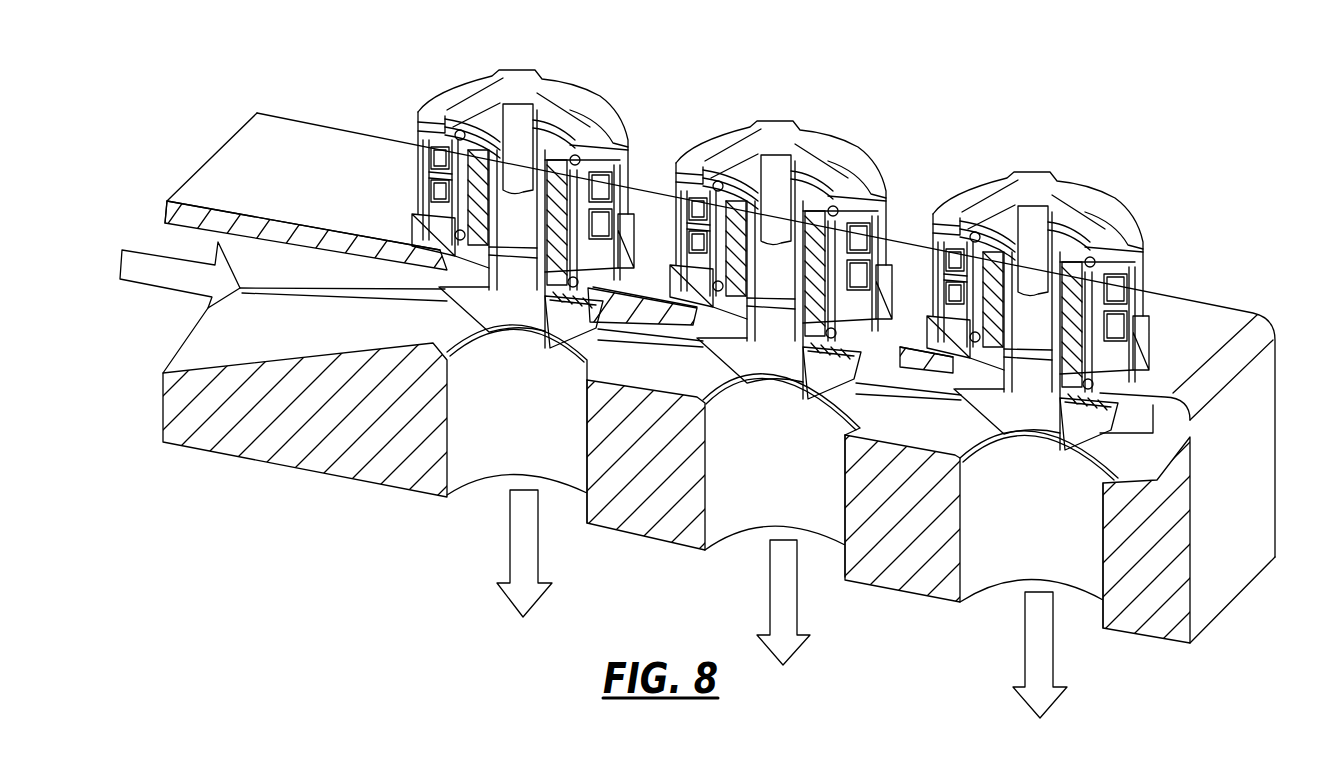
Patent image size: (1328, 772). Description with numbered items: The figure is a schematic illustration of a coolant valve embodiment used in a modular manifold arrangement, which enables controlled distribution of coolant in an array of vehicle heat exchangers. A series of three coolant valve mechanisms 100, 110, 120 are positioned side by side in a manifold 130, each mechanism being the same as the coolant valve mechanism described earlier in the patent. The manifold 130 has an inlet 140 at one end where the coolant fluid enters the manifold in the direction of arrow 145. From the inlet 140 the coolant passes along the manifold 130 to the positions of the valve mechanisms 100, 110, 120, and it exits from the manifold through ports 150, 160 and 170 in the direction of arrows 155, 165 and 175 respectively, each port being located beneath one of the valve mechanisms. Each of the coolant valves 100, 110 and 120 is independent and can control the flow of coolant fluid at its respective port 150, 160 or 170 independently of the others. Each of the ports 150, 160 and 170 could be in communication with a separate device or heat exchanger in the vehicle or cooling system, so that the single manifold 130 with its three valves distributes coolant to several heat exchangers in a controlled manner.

The coolant valve mechanism 100 is at (600, 103).
The coolant valve mechanism 110 is at (847, 152).
The coolant valve mechanism 120 is at (1117, 207).
The manifold 130 is at (1230, 567).
The inlet 140 is at (232, 338).
The arrow 145 is at (145, 265).
The port 150 is at (460, 480).
The arrow 155 is at (517, 603).
The port 160 is at (722, 520).
The arrow 165 is at (793, 648).
The port 170 is at (973, 580).
The arrow 175 is at (1048, 688).